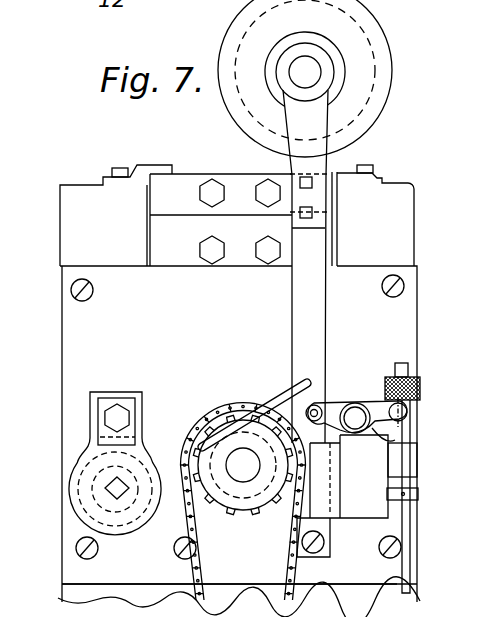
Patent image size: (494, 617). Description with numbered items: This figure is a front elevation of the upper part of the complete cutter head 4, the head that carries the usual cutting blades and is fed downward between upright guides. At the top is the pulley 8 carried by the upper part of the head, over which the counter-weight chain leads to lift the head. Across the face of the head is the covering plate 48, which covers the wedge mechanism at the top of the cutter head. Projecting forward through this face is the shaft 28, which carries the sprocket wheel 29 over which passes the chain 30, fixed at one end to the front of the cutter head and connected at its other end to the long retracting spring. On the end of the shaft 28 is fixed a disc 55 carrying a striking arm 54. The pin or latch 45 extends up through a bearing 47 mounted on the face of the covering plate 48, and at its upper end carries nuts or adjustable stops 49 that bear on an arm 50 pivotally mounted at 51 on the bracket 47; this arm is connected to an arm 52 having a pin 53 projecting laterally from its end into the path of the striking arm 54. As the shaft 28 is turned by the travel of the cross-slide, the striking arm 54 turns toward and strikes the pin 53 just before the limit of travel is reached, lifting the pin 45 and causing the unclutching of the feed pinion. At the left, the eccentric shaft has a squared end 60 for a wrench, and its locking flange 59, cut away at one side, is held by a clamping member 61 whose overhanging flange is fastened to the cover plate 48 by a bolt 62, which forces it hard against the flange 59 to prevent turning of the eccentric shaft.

The head 4 is at (338, 591).
The pulley 8 is at (383, 72).
The shaft 28 is at (243, 465).
The sprocket wheel 29 is at (232, 518).
The chain 30 is at (207, 413).
The pin or latch 45 is at (405, 528).
The bearing 47 is at (342, 476).
The covering plate 48 is at (435, 300).
The nuts or adjustable stops 49 is at (420, 392).
The arm 50 is at (408, 411).
The pivot 51 is at (355, 405).
The arm 52 is at (330, 412).
The pin 53 is at (315, 404).
The striking arm 54 is at (277, 400).
The disc 55 is at (285, 491).
The locking flange 59 is at (115, 483).
The squared end 60 is at (130, 470).
The clamping member 61 is at (132, 428).
The bolt 62 is at (126, 410).